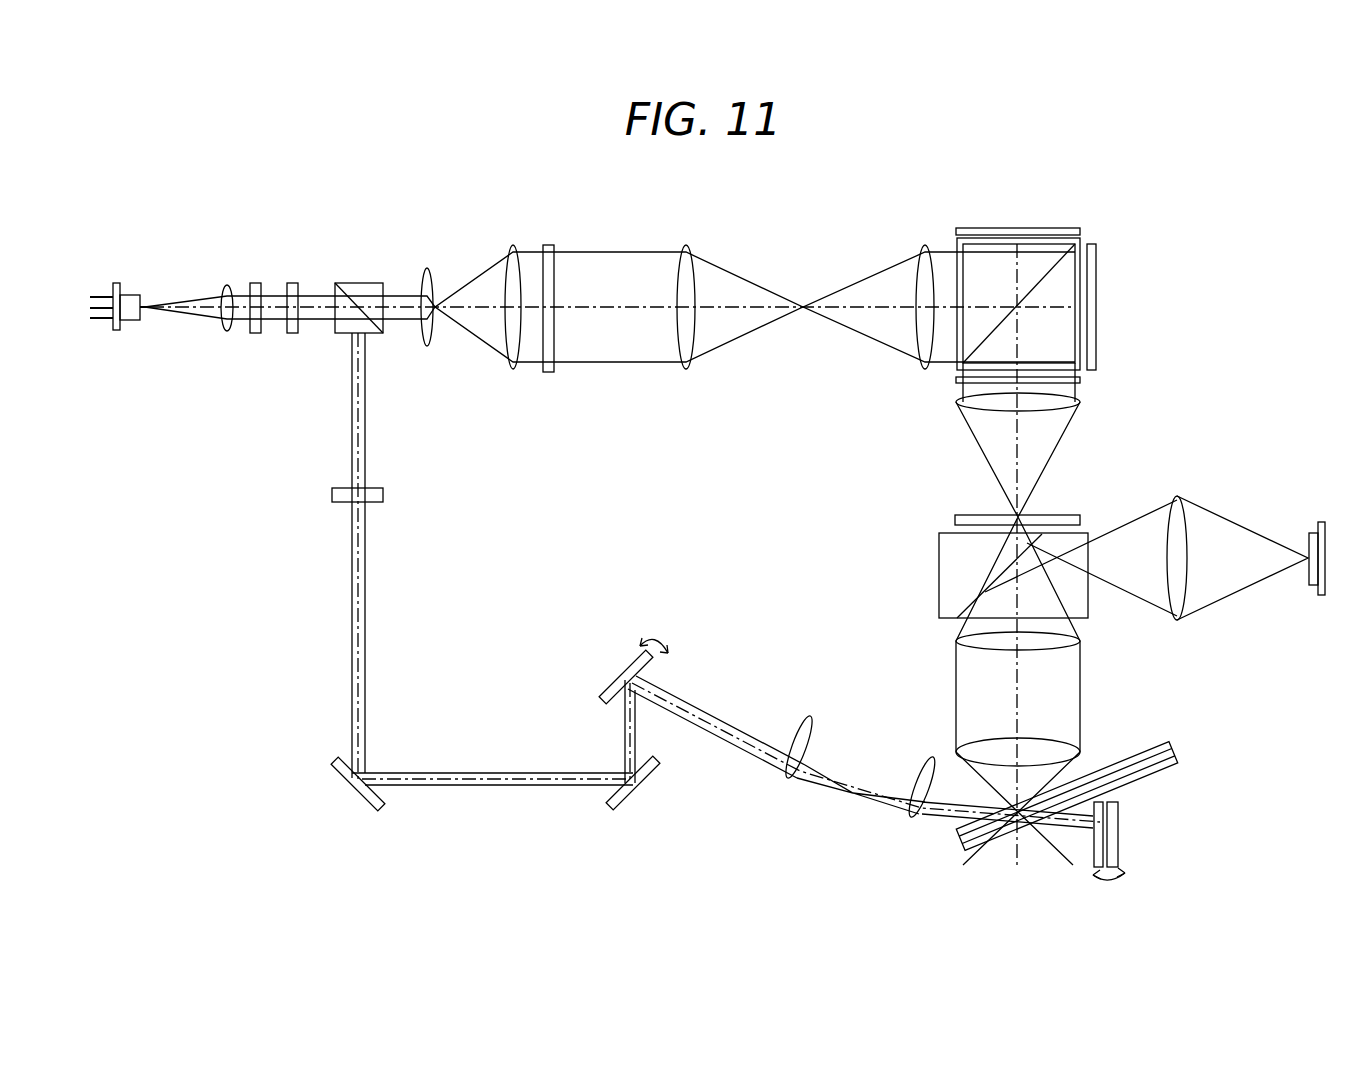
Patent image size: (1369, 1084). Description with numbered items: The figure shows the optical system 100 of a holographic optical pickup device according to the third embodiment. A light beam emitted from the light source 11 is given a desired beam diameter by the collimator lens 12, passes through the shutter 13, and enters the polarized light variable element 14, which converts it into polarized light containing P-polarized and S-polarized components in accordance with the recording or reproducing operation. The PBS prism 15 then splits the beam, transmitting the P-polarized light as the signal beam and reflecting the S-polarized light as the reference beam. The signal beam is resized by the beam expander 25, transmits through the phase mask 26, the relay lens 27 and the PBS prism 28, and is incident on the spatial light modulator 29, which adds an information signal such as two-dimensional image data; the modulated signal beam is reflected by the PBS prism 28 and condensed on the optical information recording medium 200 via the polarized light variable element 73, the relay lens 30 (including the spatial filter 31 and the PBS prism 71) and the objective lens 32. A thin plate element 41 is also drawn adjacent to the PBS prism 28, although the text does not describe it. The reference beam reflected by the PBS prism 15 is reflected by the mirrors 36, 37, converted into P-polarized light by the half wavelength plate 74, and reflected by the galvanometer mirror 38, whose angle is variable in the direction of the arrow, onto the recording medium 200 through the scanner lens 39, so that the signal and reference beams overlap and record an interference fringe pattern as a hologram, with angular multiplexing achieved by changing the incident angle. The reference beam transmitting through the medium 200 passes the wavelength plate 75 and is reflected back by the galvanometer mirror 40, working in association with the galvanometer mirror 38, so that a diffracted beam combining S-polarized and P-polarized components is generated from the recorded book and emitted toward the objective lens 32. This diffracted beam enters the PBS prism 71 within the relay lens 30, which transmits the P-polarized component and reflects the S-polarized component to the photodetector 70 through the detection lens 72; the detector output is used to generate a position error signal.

The light source 11 is at (125, 283).
The collimator lens 12 is at (227, 285).
The shutter 13 is at (256, 283).
The polarized light variable element 14 is at (290, 283).
The polarized light beam splitter (PBS) prism 15 is at (356, 290).
The beam expander 25 is at (522, 245).
The phase mask 26 is at (549, 245).
The relay lens 27 is at (677, 246).
The PBS prism 28 is at (967, 265).
The spatial light modulator 29 is at (1096, 272).
The relay lens 30 is at (945, 397).
The spatial filter 31 is at (1070, 515).
The objective lens 32 is at (1065, 748).
The mirror 36 is at (333, 762).
The mirror 37 is at (648, 778).
The galvanometer mirror 38 is at (605, 685).
The scanner lens 39 is at (857, 786).
The galvanometer mirror 40 is at (1120, 814).
The optical plate 41 is at (1057, 228).
The photodetector 70 is at (1320, 522).
The PBS prism 71 is at (1080, 608).
The detection lens 72 is at (1180, 497).
The polarized light variable element 73 is at (1080, 381).
The half wavelength plate 74 is at (384, 491).
The wavelength plate 75 is at (1093, 862).
The optical system 100 is at (683, 186).
The optical information recording medium 200 is at (1178, 745).